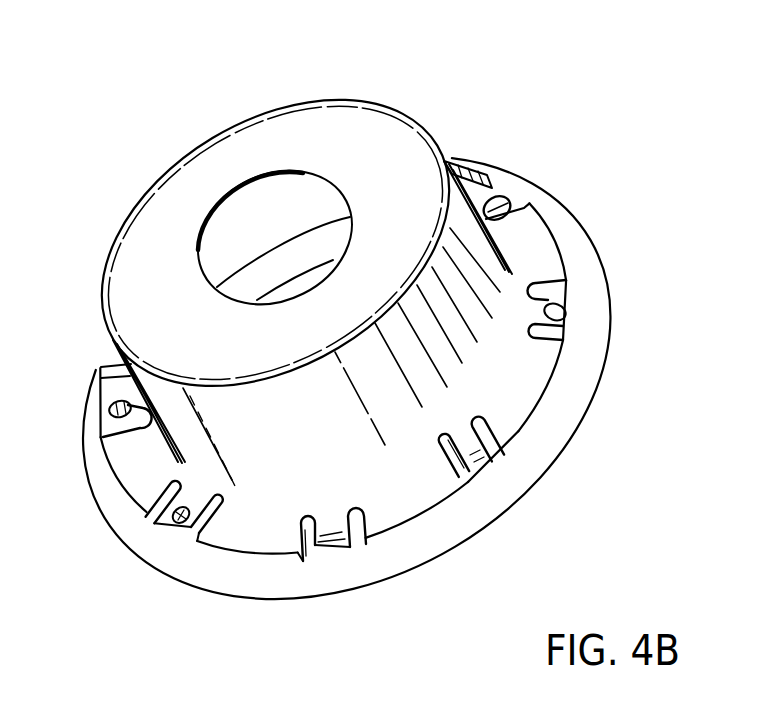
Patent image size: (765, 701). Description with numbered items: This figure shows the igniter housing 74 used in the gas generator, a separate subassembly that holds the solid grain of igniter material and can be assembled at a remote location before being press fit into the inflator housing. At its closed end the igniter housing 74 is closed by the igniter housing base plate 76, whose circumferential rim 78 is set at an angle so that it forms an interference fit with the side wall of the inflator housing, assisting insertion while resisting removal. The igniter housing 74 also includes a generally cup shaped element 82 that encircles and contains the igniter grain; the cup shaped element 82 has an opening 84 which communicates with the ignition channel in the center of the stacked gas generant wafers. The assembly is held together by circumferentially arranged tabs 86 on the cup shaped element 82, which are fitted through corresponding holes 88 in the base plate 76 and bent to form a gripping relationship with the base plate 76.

The igniter housing 74 is at (399, 103).
The igniter housing base plate 76 is at (578, 376).
The circumferential rim 78 is at (508, 500).
The cup shaped element 82 is at (459, 203).
The opening 84 is at (200, 233).
The tabs 86 is at (173, 517).
The holes 88 is at (113, 407).